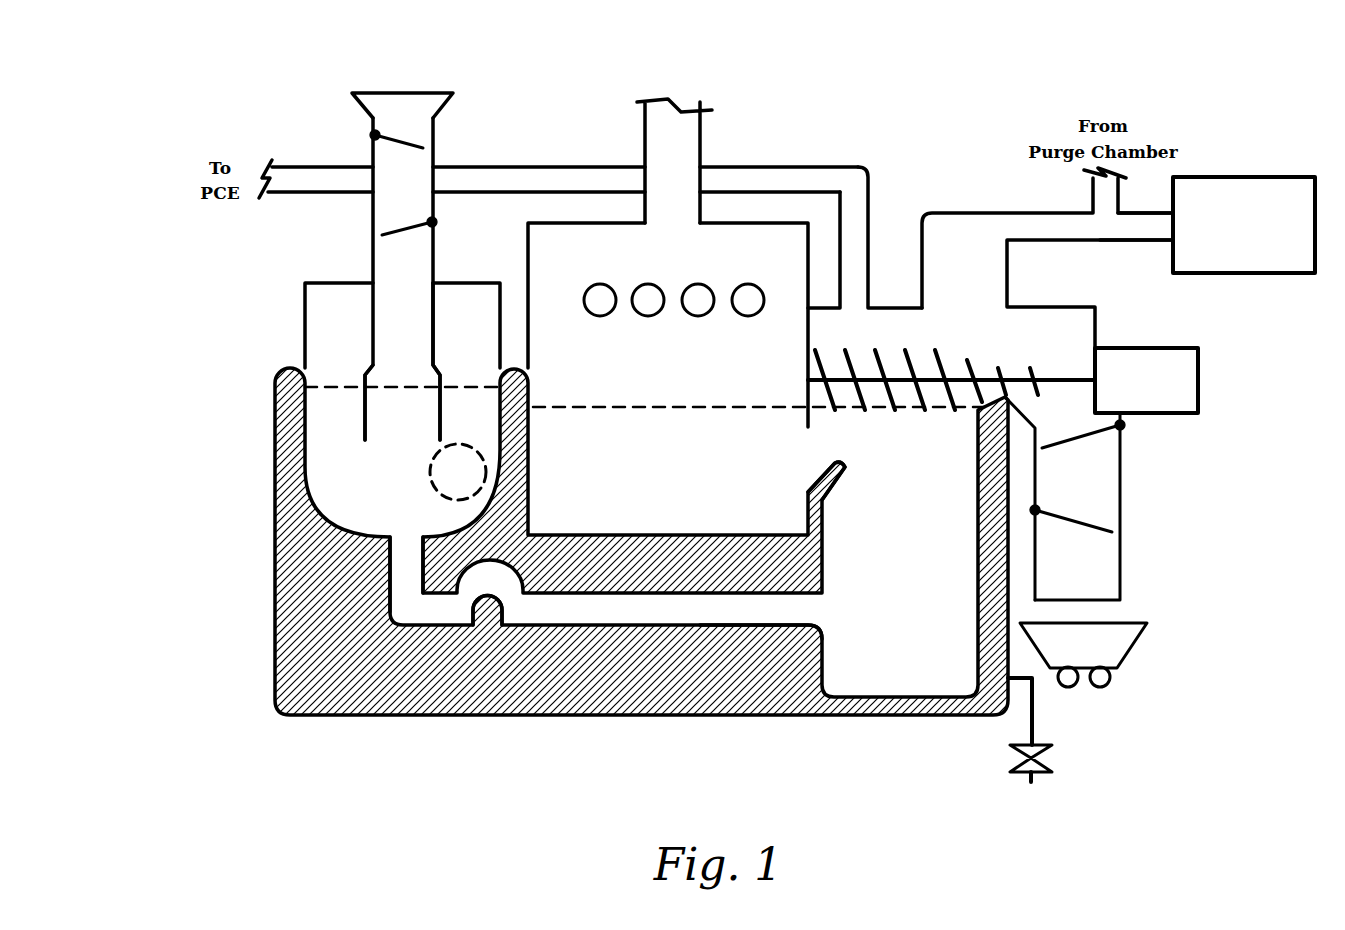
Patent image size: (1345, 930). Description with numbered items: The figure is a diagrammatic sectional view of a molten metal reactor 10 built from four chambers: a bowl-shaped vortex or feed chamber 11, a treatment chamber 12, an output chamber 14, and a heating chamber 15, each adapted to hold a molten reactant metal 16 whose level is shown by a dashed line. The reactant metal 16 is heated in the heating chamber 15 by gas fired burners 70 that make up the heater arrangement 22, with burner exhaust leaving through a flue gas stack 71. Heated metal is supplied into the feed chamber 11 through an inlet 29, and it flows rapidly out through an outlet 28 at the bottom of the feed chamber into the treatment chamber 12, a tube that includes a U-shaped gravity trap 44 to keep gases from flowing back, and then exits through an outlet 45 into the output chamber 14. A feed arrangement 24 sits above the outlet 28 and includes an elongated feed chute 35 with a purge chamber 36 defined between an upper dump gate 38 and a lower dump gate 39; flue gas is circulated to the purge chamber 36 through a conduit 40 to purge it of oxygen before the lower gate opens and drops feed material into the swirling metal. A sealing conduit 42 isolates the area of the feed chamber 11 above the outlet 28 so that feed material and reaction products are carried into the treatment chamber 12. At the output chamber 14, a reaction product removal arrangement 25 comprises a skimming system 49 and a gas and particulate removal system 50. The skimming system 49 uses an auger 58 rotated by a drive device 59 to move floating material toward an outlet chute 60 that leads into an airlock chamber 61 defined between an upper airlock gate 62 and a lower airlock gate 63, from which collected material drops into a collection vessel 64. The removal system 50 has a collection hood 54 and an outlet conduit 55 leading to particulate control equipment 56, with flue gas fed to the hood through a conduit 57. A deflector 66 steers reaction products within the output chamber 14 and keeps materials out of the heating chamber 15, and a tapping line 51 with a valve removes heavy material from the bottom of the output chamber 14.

The molten metal reactor 10 is at (232, 104).
The feed chamber 11 is at (290, 345).
The treatment chamber 12 is at (536, 624).
The output chamber 14 is at (812, 696).
The heating chamber 15 is at (797, 222).
The molten reactant metal 16 is at (329, 459).
The heater arrangement 22 is at (682, 333).
The feed arrangement 24 is at (470, 148).
The reaction product removal arrangement 25 is at (1200, 434).
The outlet 28 is at (393, 540).
The inlet 29 is at (430, 478).
The feed chute 35 is at (433, 336).
The purge chamber 36 is at (391, 193).
The upper dump gate 38 is at (430, 134).
The lower dump gate 39 is at (437, 223).
The conduit 40 is at (578, 167).
The sealing conduit 42 is at (365, 375).
The gravity trap 44 is at (424, 622).
The outlet 45 is at (820, 632).
The skimming system 49 is at (976, 348).
The gas and particulate removal system 50 is at (965, 196).
The tapping line 51 is at (1037, 700).
The collection hood 54 is at (1015, 306).
The outlet conduit 55 is at (1140, 242).
The particulate control equipment 56 is at (1273, 177).
The conduit 57 is at (730, 167).
The auger 58 is at (860, 360).
The drive device 59 is at (1166, 348).
The outlet chute 60 is at (1054, 426).
The airlock chamber 61 is at (1067, 488).
The upper airlock gate 62 is at (1122, 430).
The lower airlock gate 63 is at (1114, 530).
The collection vessel 64 is at (1130, 649).
The deflector 66 is at (842, 481).
The gas fired burners 70 is at (591, 287).
The flue gas stack 71 is at (705, 130).